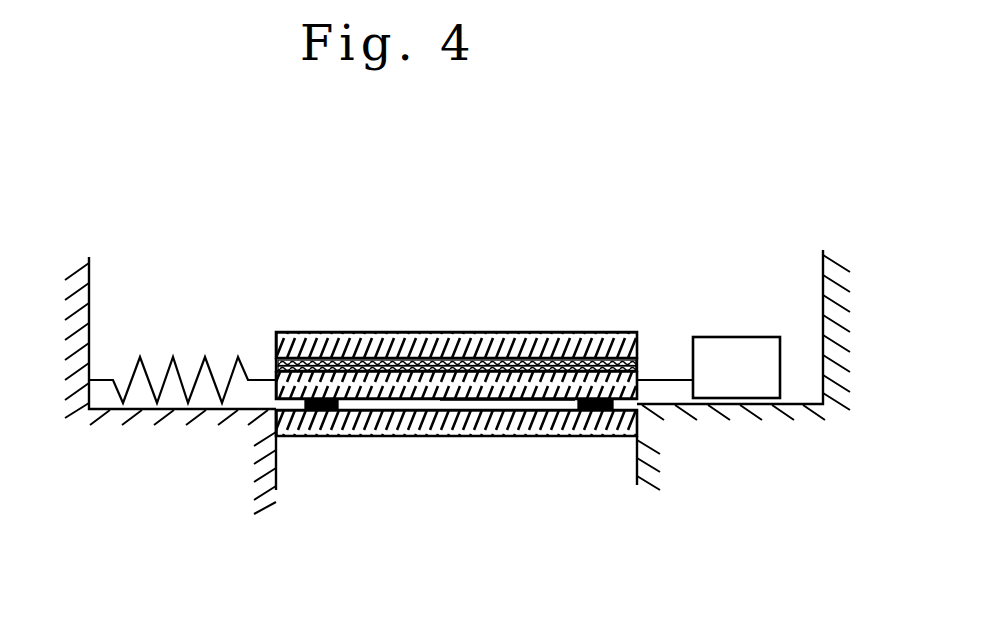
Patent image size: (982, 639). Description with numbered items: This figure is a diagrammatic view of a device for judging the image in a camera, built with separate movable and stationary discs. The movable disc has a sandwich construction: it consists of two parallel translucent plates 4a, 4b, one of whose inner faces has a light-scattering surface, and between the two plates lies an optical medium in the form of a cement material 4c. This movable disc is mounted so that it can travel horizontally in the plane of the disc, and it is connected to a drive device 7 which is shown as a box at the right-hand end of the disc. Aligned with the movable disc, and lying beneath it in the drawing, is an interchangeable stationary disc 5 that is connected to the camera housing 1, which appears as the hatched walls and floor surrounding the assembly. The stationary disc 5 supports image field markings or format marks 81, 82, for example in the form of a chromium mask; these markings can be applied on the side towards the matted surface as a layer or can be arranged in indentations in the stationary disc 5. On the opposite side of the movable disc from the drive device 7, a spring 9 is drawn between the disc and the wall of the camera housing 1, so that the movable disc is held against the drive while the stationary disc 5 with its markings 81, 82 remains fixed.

The camera housing 1 is at (243, 420).
The spring 9 is at (164, 358).
The translucent plate 4a is at (330, 333).
The translucent plate 4b is at (401, 378).
The cement material 4c is at (528, 368).
The stationary disc 5 is at (396, 436).
The image field marking 81 is at (331, 412).
The image field marking 82 is at (468, 405).
The drive device 7 is at (727, 346).